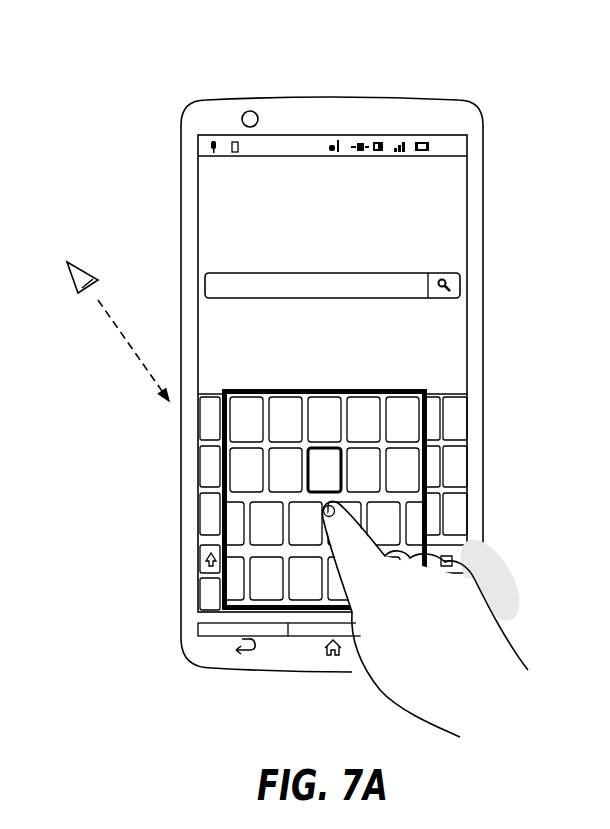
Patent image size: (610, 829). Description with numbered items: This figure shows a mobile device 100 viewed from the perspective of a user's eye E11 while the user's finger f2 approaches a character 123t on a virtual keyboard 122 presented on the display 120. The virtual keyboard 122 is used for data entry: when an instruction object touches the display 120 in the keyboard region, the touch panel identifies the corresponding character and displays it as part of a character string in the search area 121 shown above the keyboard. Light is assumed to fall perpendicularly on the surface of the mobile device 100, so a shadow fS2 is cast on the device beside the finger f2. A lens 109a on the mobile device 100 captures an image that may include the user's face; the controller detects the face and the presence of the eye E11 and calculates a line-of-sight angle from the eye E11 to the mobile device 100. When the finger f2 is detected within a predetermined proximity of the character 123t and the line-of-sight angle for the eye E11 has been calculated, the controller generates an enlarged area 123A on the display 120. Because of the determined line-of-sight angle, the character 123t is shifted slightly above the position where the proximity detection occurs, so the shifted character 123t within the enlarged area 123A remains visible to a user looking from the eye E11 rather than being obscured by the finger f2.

The mobile device 100 is at (350, 672).
The lens 109a is at (250, 110).
The display 120 is at (465, 212).
The search area 121 is at (231, 273).
The virtual keyboard 122 is at (196, 428).
The enlarged area 123A is at (264, 473).
The character 123t is at (307, 489).
The finger f2 is at (343, 537).
The shadow fS2 is at (498, 590).
The eye E11 is at (84, 268).